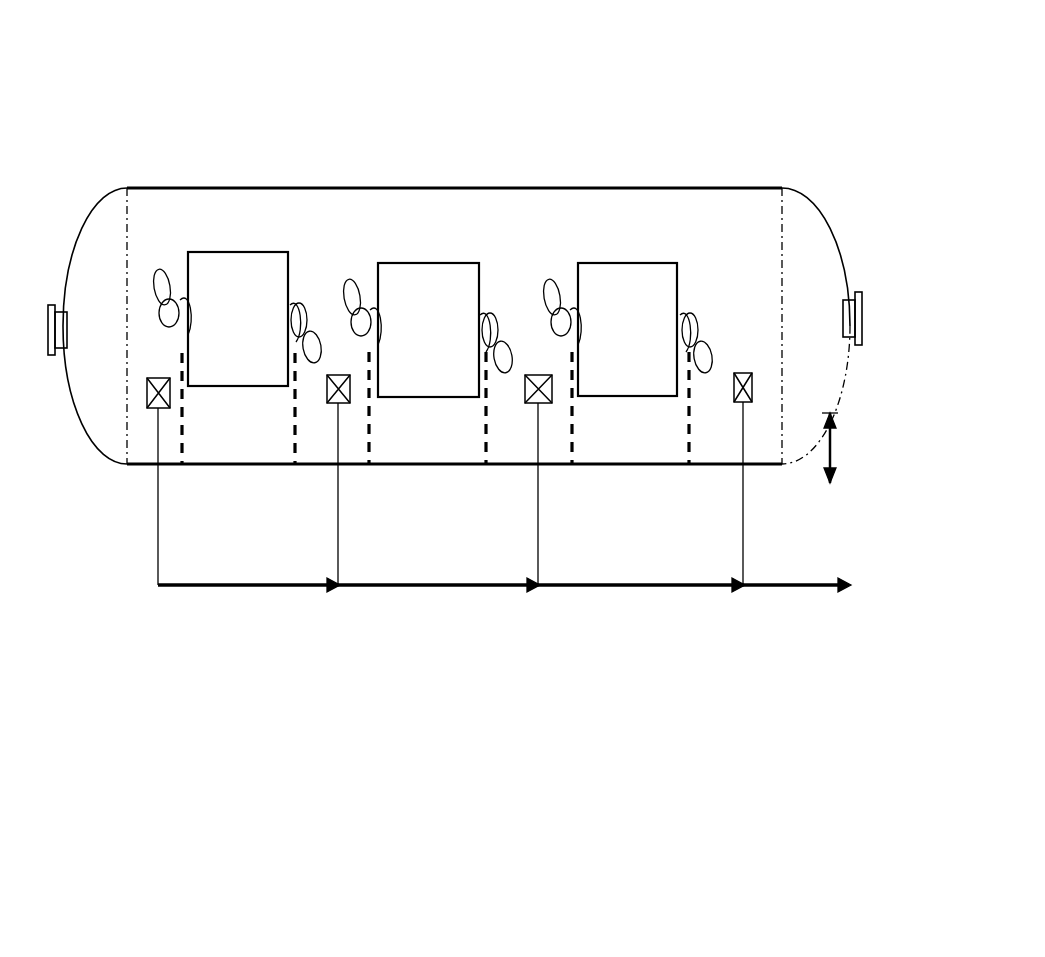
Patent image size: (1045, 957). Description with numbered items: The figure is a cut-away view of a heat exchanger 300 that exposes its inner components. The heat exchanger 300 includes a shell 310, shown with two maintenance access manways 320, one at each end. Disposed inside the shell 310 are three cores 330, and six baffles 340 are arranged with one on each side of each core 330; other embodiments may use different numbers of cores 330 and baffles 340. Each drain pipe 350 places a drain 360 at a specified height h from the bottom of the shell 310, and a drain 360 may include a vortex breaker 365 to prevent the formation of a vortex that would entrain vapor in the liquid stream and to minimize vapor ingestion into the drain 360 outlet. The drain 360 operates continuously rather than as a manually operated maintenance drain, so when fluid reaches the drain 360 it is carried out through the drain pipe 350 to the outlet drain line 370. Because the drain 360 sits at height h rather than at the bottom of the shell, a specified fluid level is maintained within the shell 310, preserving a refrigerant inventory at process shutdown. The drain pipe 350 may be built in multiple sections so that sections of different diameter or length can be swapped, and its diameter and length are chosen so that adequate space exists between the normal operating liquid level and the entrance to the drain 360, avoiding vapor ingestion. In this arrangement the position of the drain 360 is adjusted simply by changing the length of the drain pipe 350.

The heat exchanger 300 is at (128, 112).
The shell 310 is at (593, 223).
The maintenance access manway 320 is at (67, 356).
The core 330 is at (238, 386).
The baffle 340 is at (522, 440).
The drain pipe 350 is at (340, 427).
The drain 360 is at (811, 377).
The vortex breaker 365 is at (733, 393).
The outlet drain line 370 is at (798, 590).